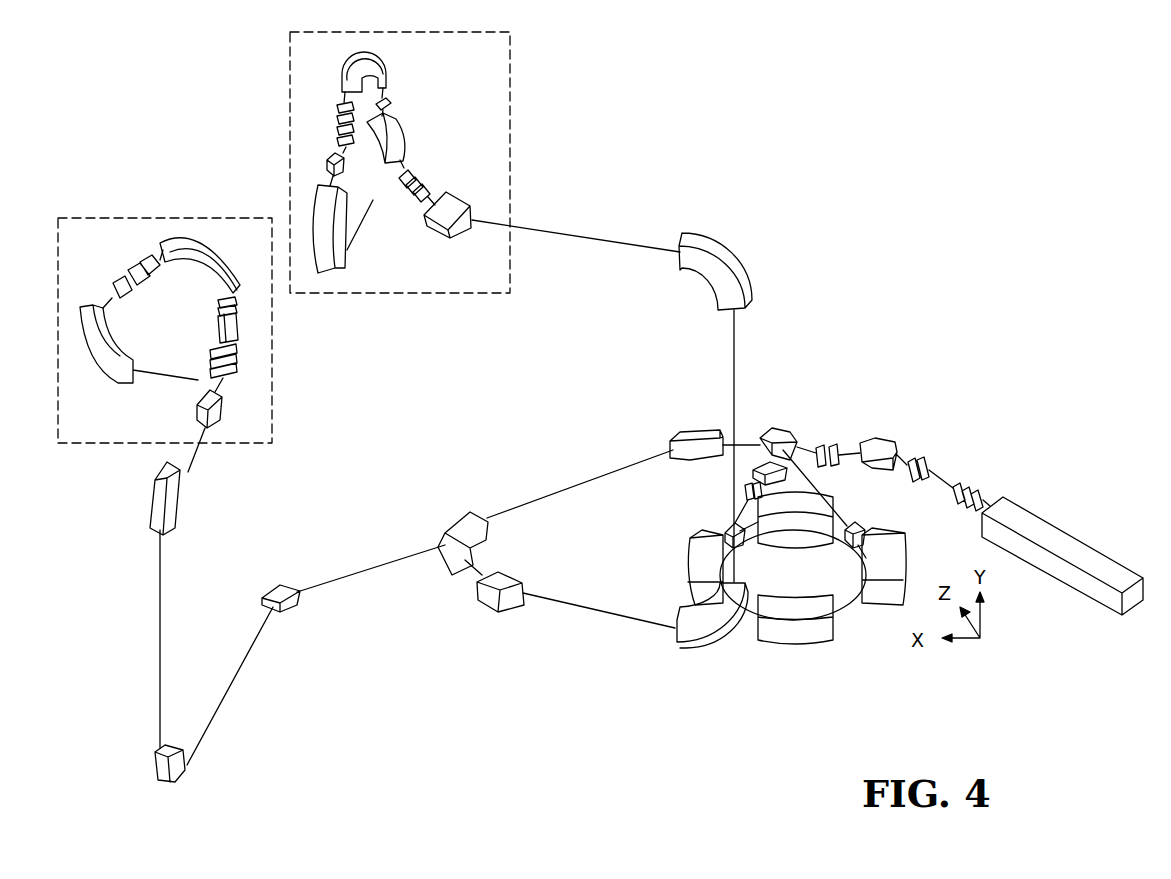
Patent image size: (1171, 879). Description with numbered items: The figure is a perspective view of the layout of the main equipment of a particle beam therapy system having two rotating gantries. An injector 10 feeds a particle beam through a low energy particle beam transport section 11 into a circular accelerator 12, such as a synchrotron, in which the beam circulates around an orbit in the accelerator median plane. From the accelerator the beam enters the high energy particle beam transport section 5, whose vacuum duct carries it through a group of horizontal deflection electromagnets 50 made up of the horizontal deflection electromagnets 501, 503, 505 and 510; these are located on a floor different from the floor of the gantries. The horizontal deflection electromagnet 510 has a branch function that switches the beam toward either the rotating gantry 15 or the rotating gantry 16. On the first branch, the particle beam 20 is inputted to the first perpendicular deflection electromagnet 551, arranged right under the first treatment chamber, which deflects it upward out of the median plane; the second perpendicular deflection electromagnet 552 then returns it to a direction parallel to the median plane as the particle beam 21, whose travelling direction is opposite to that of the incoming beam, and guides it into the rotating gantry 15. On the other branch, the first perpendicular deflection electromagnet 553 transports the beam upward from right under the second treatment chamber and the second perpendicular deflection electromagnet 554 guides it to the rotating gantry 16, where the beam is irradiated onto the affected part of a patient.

The high energy particle beam transport section 5 is at (572, 332).
The injector 10 is at (1045, 517).
The low energy particle beam transport section 11 is at (911, 437).
The circular accelerator 12 is at (806, 580).
The rotating gantry 15 is at (510, 126).
The rotating gantry 16 is at (272, 372).
The particle beam 20 is at (565, 610).
The particle beam 21 is at (520, 222).
The group of horizontal deflection electromagnets 50 is at (600, 540).
The horizontal deflection electromagnet 501 is at (688, 428).
The horizontal deflection electromagnet 503 is at (495, 600).
The horizontal deflection electromagnet 505 is at (283, 580).
The horizontal deflection electromagnet 510 is at (450, 512).
The first perpendicular deflection electromagnet 551 is at (706, 628).
The second perpendicular deflection electromagnet 552 is at (718, 248).
The first perpendicular deflection electromagnet 553 is at (190, 768).
The second perpendicular deflection electromagnet 554 is at (178, 498).